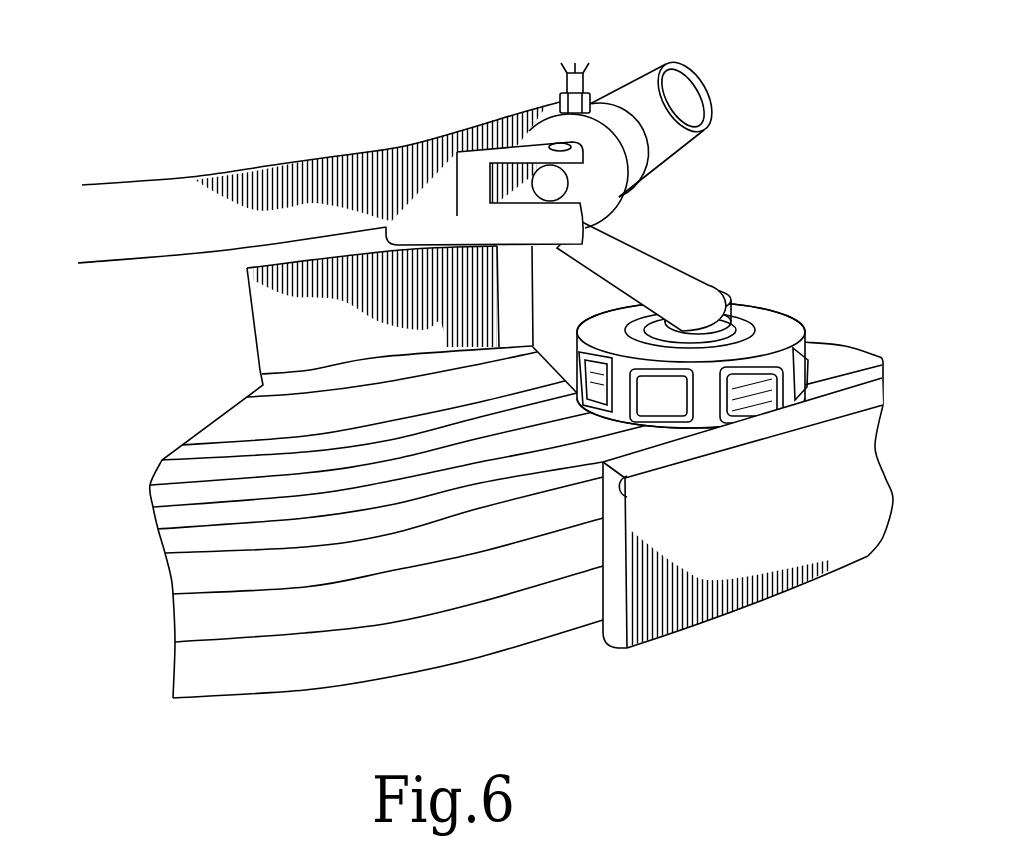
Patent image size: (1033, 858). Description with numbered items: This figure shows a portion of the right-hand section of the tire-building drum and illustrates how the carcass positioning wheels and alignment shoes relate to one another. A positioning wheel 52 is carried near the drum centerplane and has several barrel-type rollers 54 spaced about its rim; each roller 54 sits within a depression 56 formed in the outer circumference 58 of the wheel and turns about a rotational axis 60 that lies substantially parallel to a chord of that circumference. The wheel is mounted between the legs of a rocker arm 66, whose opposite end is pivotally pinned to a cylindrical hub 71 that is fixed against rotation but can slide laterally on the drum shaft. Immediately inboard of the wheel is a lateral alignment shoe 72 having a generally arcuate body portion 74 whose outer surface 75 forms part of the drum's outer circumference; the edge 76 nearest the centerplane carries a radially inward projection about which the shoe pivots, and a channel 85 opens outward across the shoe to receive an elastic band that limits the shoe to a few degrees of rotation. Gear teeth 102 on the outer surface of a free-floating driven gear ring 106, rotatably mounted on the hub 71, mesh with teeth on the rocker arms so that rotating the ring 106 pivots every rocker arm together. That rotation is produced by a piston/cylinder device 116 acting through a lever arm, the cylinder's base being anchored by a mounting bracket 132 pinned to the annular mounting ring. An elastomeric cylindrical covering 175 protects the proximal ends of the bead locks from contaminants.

The positioning wheel 52 is at (627, 340).
The barrel-type roller 54 is at (678, 407).
The depression 56 is at (636, 412).
The outer circumference of wheel 58 is at (620, 375).
The rotational axis 60 is at (582, 396).
The rocker arm 66 is at (645, 240).
The cylindrical hub 71 is at (271, 330).
The lateral alignment shoe 72 is at (737, 611).
The body portion 74 is at (830, 528).
The outer surface 75 is at (817, 511).
The edge of shoe 76 is at (618, 647).
The channel 85 is at (616, 488).
The gear teeth 102 is at (490, 304).
The driven gear ring 106 is at (458, 313).
The piston/cylinder device 116 is at (623, 84).
The mounting bracket 132 is at (470, 177).
The elastomeric cylindrical covering 175 is at (192, 573).